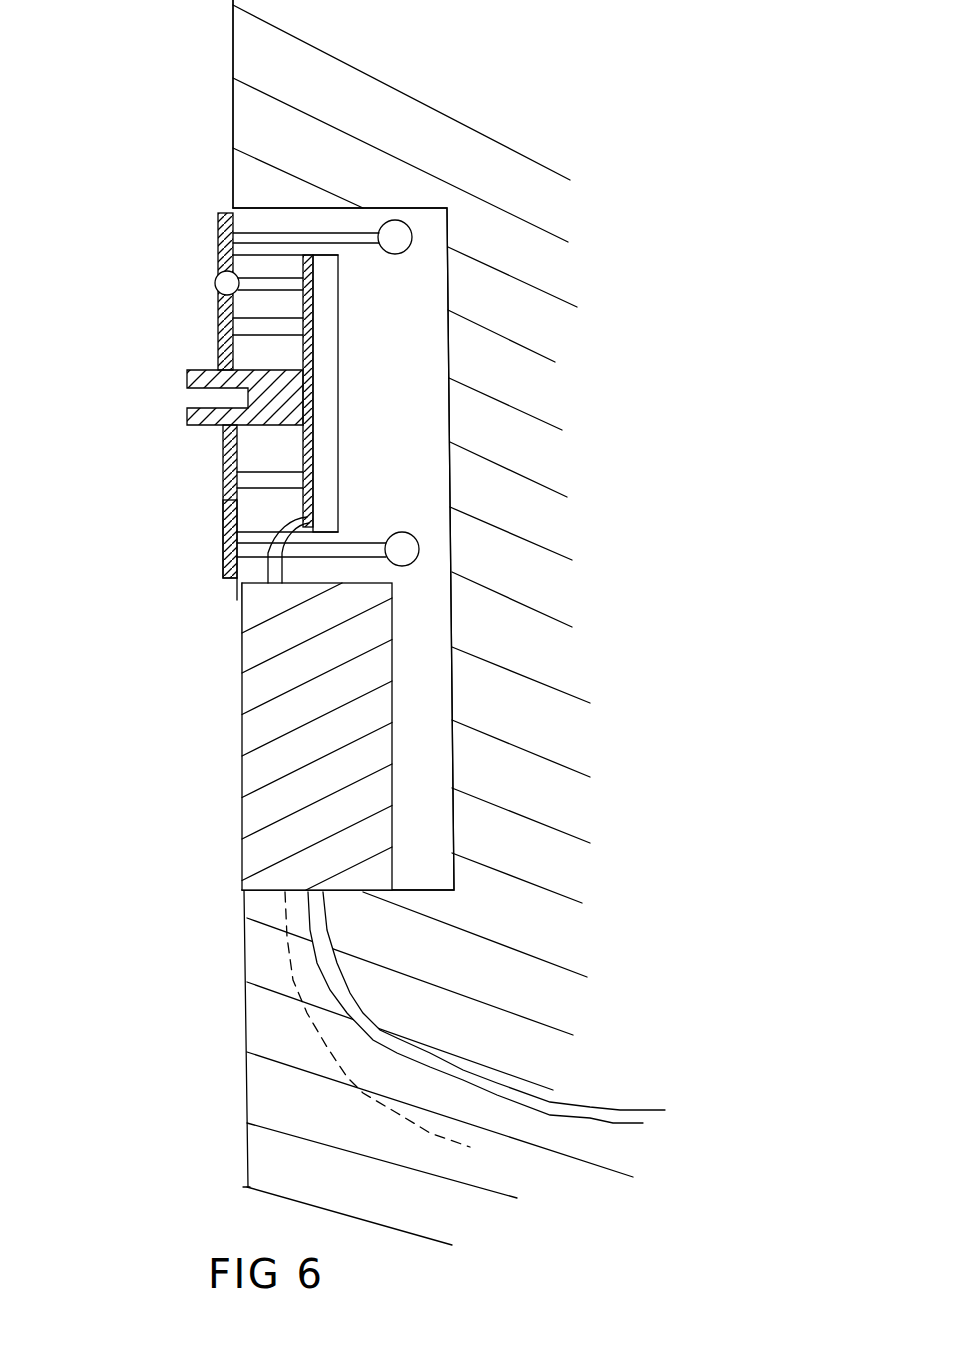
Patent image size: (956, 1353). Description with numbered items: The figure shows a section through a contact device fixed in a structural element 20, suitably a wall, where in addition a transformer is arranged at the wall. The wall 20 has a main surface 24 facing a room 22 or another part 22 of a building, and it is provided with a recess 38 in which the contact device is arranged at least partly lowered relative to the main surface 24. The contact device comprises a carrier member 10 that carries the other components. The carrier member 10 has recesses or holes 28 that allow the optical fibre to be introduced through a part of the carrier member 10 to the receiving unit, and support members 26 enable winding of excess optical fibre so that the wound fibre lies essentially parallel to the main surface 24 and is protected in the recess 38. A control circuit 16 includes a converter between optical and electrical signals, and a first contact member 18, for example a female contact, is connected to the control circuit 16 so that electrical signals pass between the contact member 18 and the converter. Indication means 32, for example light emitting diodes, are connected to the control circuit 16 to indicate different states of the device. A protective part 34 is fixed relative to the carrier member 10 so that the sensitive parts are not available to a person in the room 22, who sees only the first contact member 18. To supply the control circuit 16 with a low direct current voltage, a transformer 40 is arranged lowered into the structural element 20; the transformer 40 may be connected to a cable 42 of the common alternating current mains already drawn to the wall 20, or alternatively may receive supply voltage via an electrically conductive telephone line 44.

The carrier member 10 is at (448, 290).
The control circuit 16 is at (223, 442).
The first contact member 18 is at (187, 428).
The structural element 20 is at (548, 128).
The room 22 is at (88, 143).
The main surface 24 is at (232, 100).
The support members 26 is at (366, 542).
The recesses or holes 28 is at (253, 327).
The indication means 32 is at (215, 283).
The protective part 34 is at (227, 523).
The recess 38 is at (428, 371).
The transformer 40 is at (243, 757).
The cable 42 is at (316, 968).
The telephone line 44 is at (312, 1033).